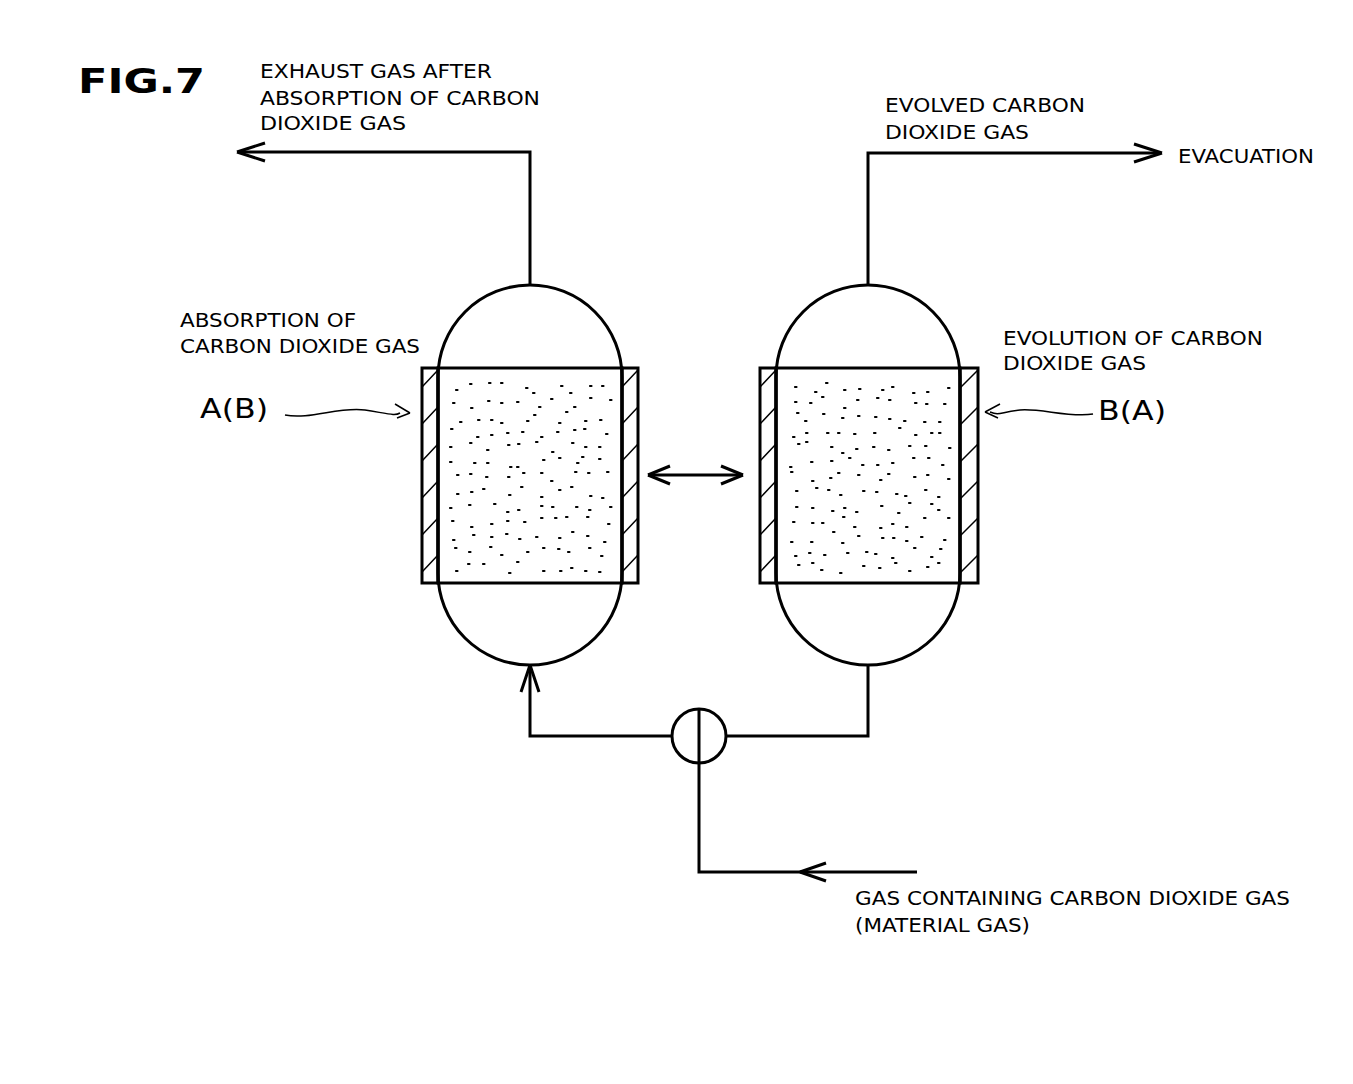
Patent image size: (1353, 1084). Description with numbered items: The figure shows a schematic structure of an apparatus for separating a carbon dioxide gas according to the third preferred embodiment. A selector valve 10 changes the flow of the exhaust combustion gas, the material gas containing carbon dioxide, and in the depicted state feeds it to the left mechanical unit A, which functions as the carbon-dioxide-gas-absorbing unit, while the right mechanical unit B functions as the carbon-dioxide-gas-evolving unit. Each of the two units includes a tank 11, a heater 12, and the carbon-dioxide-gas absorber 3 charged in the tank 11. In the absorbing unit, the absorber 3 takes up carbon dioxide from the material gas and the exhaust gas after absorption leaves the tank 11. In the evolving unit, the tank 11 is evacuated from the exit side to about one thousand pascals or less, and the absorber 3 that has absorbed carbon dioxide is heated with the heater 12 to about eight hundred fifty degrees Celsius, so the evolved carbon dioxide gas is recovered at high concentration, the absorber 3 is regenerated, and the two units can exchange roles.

The carbon-dioxide-gas absorber 3 is at (455, 523).
The selector valve 10 is at (724, 748).
The tank 11 is at (437, 597).
The heater 12 is at (422, 463).